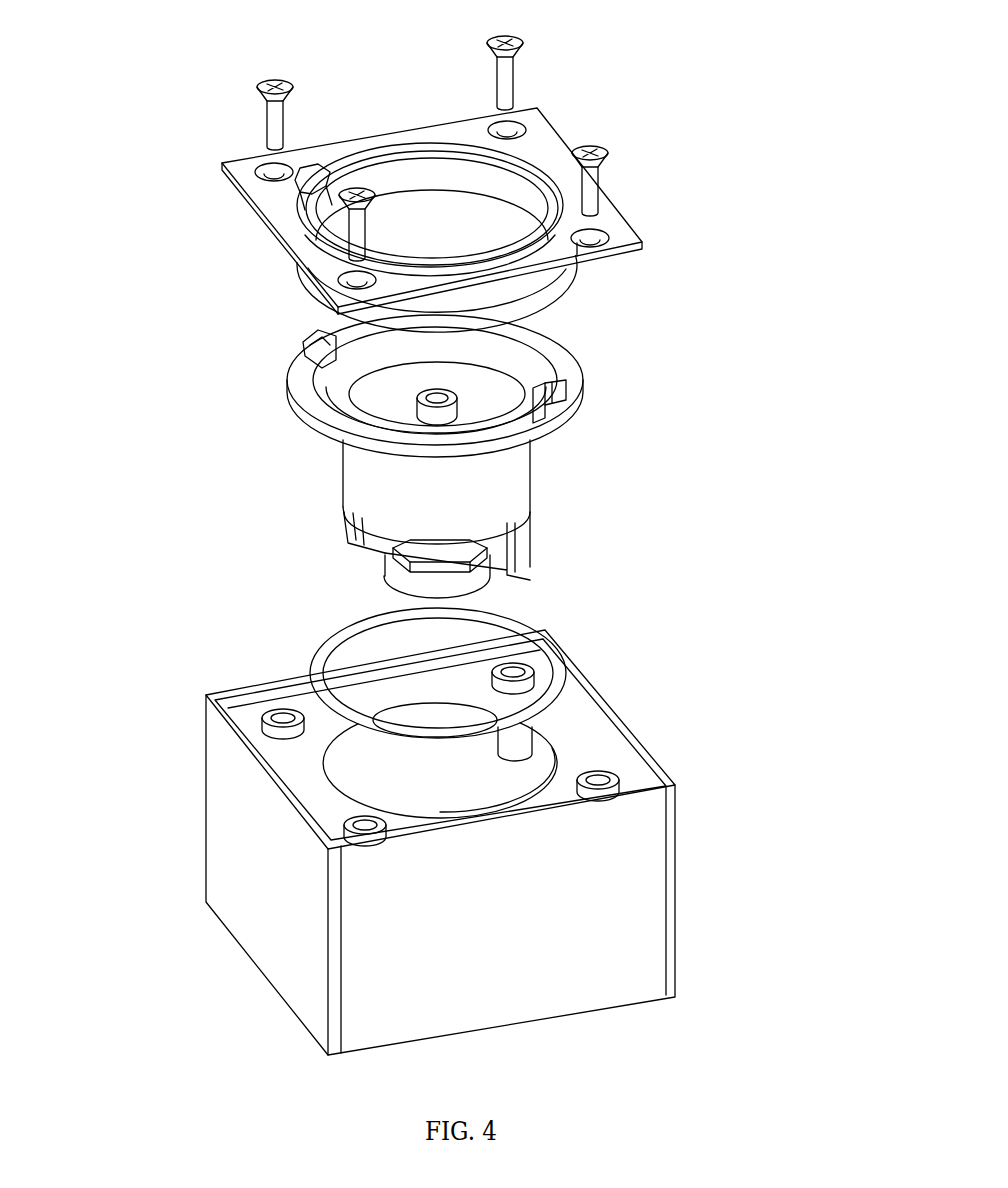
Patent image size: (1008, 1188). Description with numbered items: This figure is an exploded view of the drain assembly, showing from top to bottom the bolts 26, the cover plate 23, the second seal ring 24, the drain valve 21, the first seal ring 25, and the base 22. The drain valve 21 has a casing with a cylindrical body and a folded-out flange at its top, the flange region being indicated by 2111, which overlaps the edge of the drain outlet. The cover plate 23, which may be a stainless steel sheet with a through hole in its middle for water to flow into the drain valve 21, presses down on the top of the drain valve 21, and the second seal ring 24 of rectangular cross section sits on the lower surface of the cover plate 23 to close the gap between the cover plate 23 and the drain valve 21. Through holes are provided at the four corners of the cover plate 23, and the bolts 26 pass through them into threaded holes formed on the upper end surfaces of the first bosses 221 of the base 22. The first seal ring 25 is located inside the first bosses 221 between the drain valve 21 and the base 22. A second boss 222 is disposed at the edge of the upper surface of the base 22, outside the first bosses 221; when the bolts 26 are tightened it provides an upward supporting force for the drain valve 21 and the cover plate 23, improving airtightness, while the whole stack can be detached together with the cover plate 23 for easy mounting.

The drain valve 21 is at (638, 470).
The flange of motor 2111 is at (558, 355).
The base 22 is at (648, 868).
The first boss 221 is at (222, 717).
The second boss 222 is at (307, 677).
The cover plate 23 is at (527, 140).
The second seal ring 24 is at (263, 110).
The first seal ring 25 is at (582, 656).
The bolt 26 is at (568, 165).